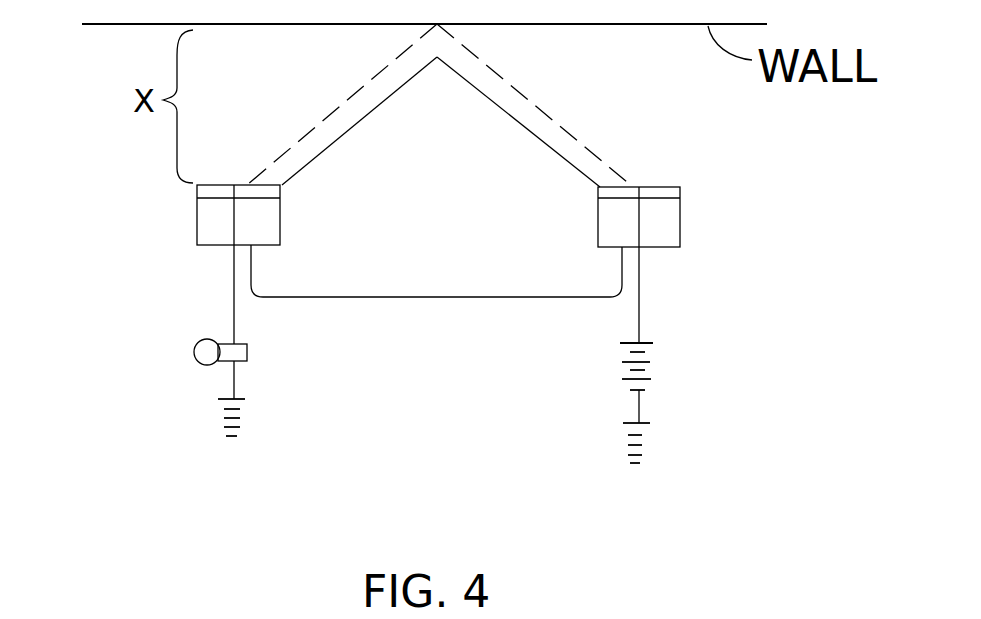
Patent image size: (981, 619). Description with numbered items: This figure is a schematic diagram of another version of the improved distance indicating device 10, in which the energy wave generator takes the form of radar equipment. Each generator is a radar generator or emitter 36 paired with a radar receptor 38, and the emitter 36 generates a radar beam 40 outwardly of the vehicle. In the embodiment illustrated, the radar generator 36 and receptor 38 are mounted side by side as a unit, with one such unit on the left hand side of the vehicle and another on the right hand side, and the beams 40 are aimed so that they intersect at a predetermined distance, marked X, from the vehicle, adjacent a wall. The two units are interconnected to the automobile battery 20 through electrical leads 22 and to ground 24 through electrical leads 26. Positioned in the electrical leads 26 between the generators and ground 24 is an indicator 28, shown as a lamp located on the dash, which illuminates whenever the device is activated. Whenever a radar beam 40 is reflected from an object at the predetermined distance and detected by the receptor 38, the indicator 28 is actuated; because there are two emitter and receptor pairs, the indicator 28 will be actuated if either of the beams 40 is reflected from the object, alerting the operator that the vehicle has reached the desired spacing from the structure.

The distance indicating device 10 is at (756, 230).
The automobile battery 20 is at (652, 365).
The electrical leads 22 is at (410, 297).
The ground 24 is at (229, 440).
The electrical leads 26 is at (234, 290).
The indicator 28 is at (194, 352).
The radar generator 36 is at (213, 228).
The radar receptor 38 is at (255, 227).
The radar beam 40 is at (353, 125).